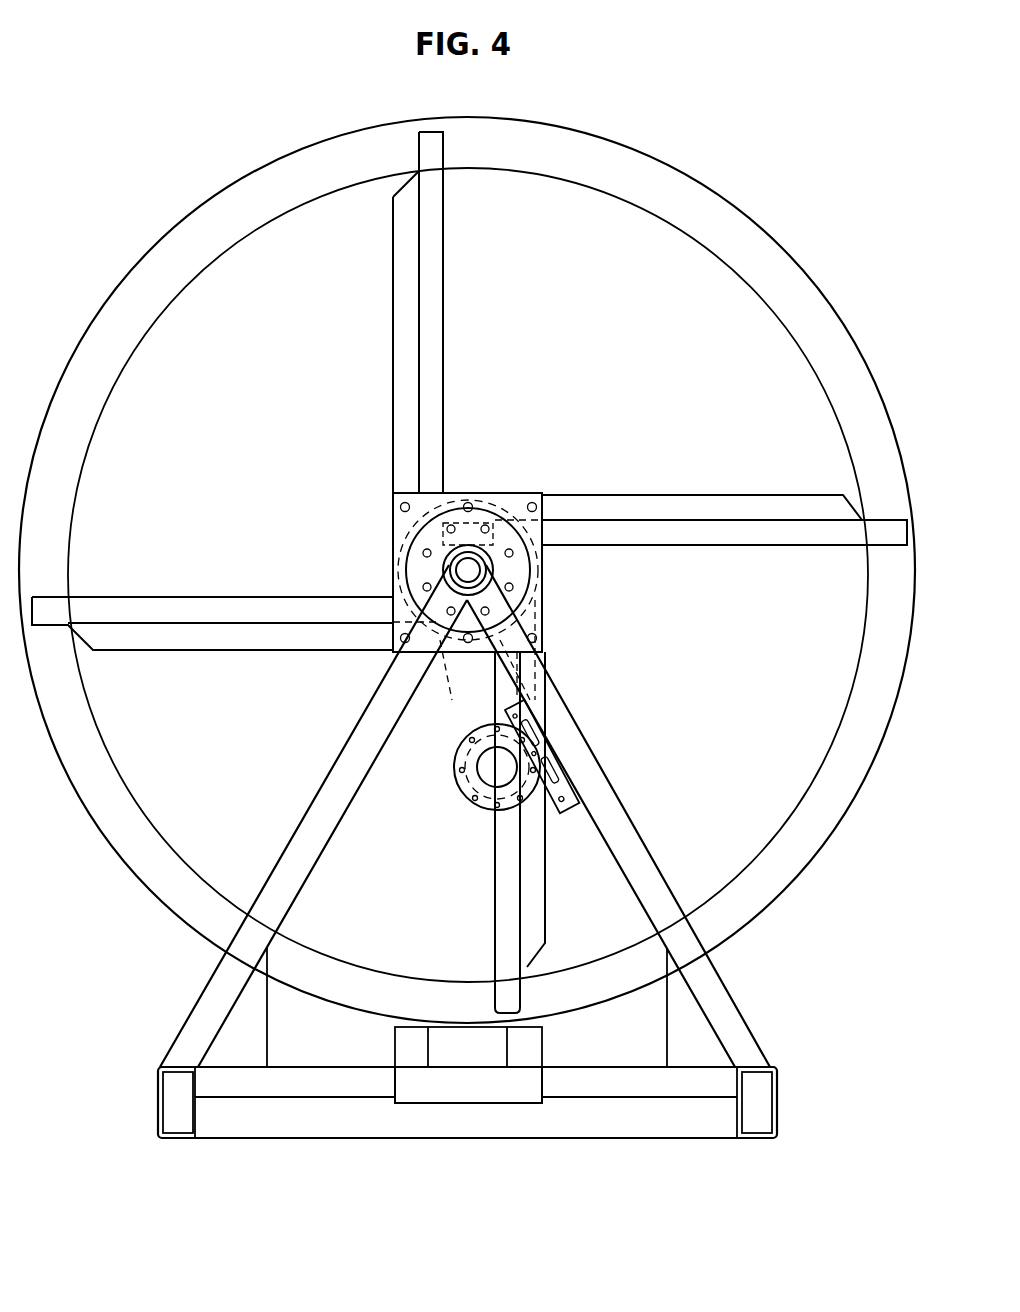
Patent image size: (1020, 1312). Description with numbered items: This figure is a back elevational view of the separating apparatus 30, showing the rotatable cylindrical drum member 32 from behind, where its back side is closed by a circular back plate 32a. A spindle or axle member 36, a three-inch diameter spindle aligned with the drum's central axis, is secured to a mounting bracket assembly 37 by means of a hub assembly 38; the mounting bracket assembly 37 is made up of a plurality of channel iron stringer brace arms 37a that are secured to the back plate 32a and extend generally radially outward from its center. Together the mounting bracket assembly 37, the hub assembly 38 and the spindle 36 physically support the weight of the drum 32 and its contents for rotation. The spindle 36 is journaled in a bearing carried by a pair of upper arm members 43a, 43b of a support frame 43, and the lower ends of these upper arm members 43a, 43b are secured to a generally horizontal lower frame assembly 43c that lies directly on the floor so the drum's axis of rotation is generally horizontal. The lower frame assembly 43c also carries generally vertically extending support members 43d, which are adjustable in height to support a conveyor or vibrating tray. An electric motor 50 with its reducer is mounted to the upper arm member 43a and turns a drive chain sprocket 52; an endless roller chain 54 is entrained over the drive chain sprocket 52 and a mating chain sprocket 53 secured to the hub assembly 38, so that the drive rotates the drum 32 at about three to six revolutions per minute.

The separating apparatus 30 is at (675, 151).
The rotatable cylindrical drum member 32 is at (248, 183).
The circular back plate 32a is at (745, 651).
The spindle or axle member 36 is at (468, 578).
The mounting bracket assembly 37 is at (487, 496).
The channel iron stringer brace arms 37a is at (444, 278).
The hub assembly 38 is at (499, 542).
The support frame 43 is at (493, 858).
The upper arm member 43a is at (735, 1020).
The upper arm member 43b is at (281, 870).
The lower frame assembly 43c is at (778, 1120).
The vertically extending support members 43d is at (397, 1050).
The electric motor 50 is at (462, 804).
The drive chain sprocket 52 is at (478, 788).
The mating chain sprocket 53 is at (406, 558).
The endless roller chain 54 is at (542, 600).